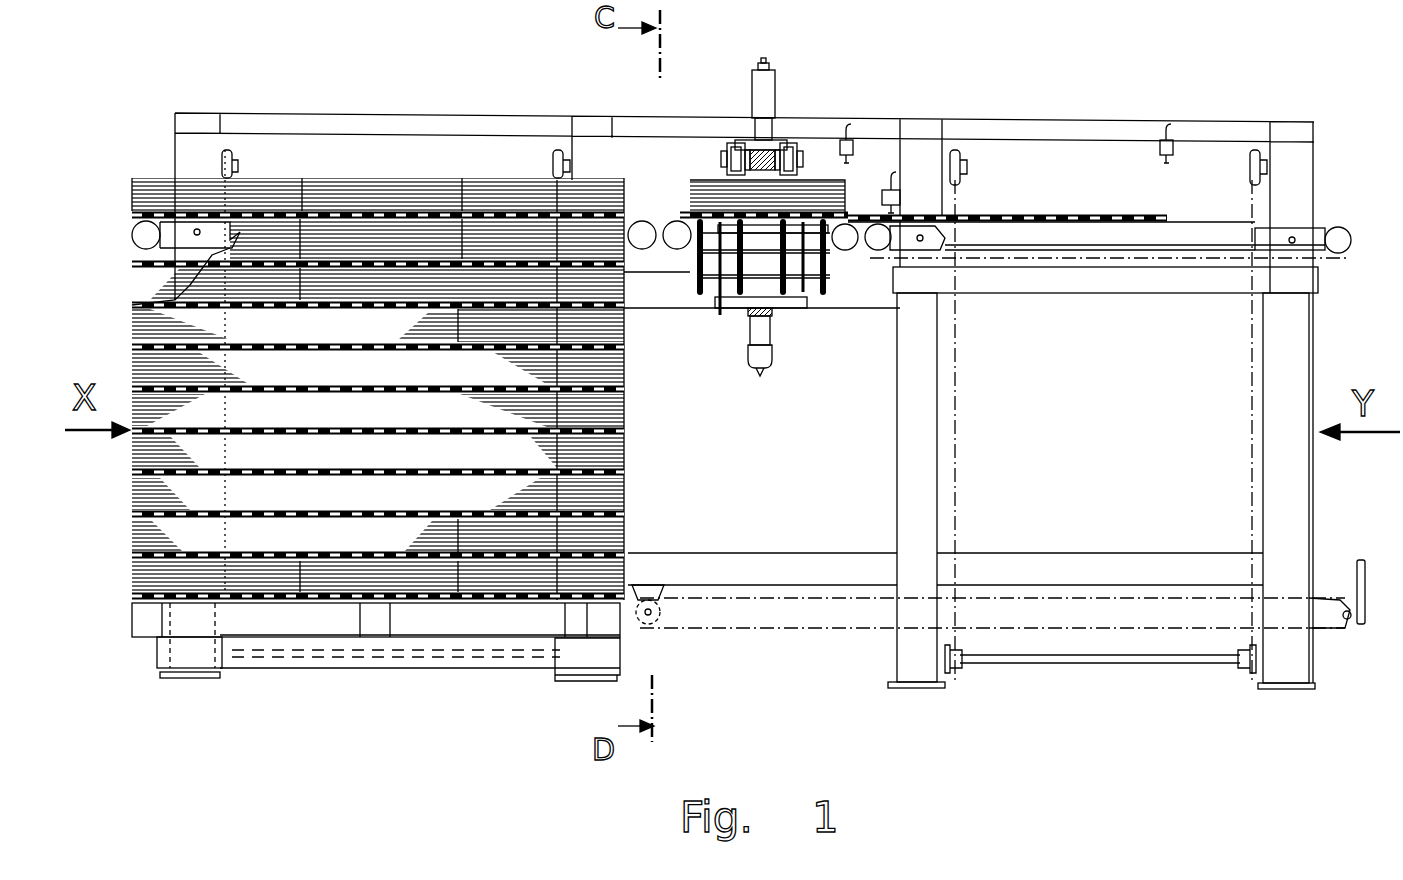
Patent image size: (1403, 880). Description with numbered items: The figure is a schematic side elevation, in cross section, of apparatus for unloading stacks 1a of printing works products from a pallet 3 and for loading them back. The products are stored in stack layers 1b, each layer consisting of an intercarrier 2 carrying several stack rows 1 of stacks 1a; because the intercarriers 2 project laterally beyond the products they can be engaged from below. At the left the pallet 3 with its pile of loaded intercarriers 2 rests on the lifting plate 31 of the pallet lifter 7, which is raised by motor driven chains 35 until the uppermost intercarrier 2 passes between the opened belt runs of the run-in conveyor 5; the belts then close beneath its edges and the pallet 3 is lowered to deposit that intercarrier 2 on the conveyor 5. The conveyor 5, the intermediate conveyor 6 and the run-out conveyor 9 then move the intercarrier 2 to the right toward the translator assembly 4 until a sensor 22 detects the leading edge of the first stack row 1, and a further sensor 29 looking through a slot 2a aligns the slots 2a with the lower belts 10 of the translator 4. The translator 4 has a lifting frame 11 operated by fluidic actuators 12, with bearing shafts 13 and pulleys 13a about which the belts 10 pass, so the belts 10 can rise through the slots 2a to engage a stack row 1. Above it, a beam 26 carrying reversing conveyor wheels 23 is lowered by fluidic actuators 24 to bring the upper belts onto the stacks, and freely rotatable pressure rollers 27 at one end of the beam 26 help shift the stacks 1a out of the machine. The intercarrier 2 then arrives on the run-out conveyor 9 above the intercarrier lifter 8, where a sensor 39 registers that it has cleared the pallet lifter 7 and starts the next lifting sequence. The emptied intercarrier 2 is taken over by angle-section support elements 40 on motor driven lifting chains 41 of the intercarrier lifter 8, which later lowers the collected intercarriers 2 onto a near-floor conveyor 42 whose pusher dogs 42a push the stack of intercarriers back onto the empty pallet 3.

The stack row 1 is at (460, 178).
The stack 1a is at (425, 190).
The stack layer 1b is at (273, 165).
The intercarrier 2 is at (492, 213).
The slot 2a is at (1028, 214).
The pallet 3 is at (378, 620).
The translator assembly 4 is at (682, 168).
The run-in conveyor 5 is at (160, 248).
The intermediate conveyor 6 is at (672, 232).
The pallet lifter 7 is at (345, 688).
The intercarrier lifter 8 is at (1088, 305).
The run-out conveyor 9 is at (1323, 228).
The belt 10 is at (827, 262).
The lifting frame 11 is at (805, 278).
The fluidic actuator 12 is at (770, 360).
The bearing shaft 13 is at (717, 290).
The pulley 13a is at (695, 280).
The sensor 22 is at (857, 147).
The reversing conveyor wheel 23 is at (735, 150).
The fluidic actuator 24 is at (770, 78).
The beam 26 is at (750, 152).
The pressure roller 27 is at (792, 150).
The sensor 29 is at (903, 193).
The lifting plate 31 is at (453, 667).
The motor driven chain 35 is at (557, 458).
The sensor 39 is at (1167, 134).
The angle-section support element 40 is at (1163, 280).
The lifting chain 41 is at (958, 352).
The near-floor conveyor 42 is at (1110, 630).
The pusher dog 42a is at (1362, 568).